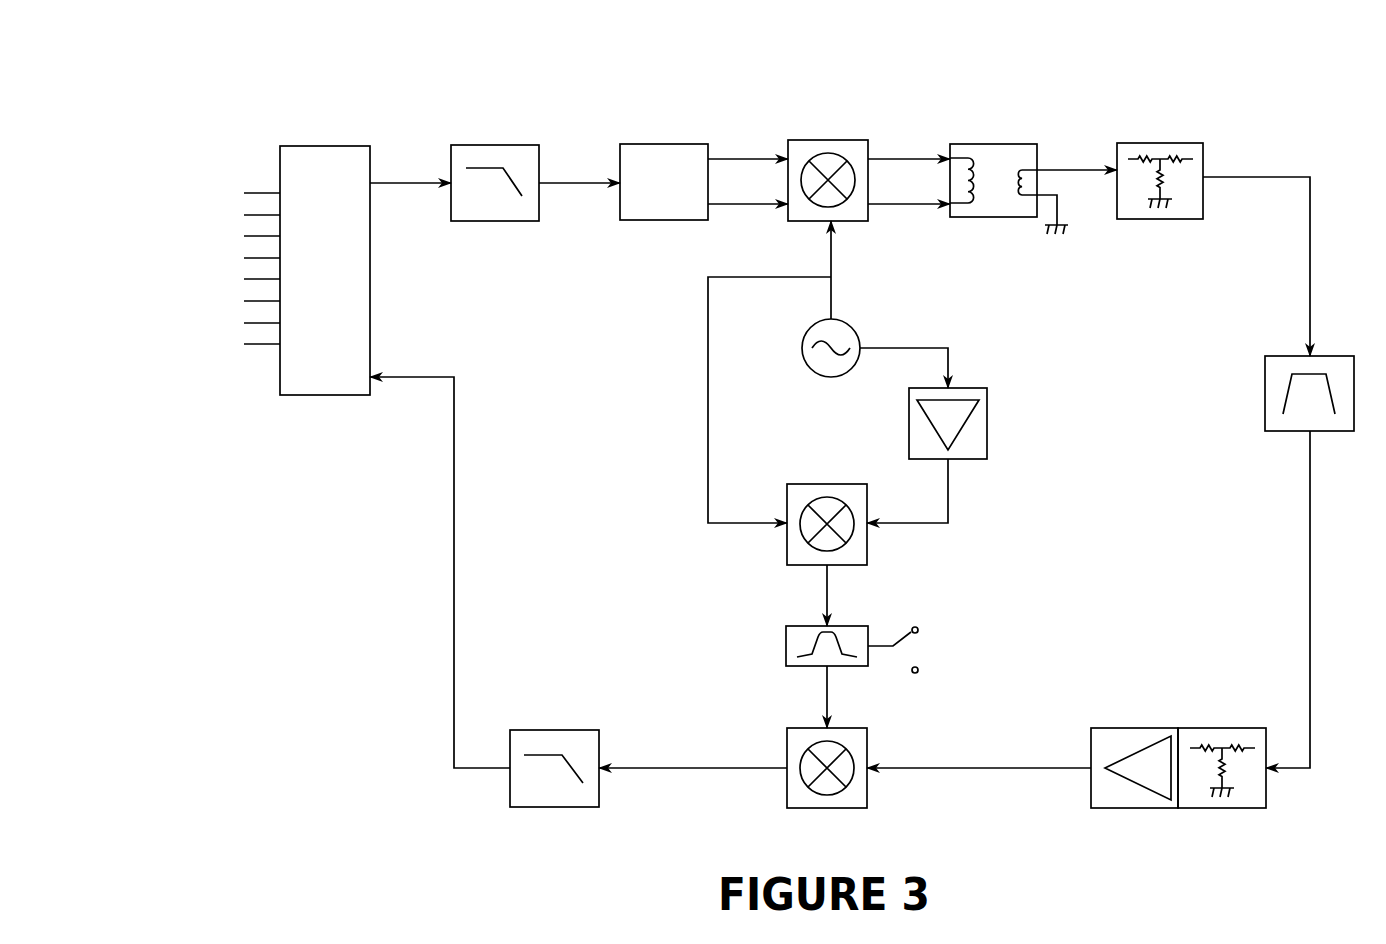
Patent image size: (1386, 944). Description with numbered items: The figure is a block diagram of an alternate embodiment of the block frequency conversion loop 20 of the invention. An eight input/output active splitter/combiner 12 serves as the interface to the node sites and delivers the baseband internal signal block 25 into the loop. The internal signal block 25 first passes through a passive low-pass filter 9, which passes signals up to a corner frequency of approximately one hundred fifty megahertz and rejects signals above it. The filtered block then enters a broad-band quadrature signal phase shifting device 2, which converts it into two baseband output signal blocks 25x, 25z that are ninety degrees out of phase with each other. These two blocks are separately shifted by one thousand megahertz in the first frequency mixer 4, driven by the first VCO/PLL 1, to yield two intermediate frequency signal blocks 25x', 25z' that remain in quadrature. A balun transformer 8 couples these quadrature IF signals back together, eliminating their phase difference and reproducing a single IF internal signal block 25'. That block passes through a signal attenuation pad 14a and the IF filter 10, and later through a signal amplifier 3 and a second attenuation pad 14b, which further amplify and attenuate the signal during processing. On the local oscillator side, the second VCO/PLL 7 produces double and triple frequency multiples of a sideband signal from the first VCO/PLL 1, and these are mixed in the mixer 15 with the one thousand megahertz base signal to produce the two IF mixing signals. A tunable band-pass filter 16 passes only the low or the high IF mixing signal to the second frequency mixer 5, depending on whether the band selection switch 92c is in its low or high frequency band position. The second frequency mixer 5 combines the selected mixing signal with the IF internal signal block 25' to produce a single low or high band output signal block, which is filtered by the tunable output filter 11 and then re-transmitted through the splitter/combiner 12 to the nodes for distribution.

The first VCO/PLL 1 is at (882, 372).
The broad-band quadrature signal phase shifting device 2 is at (662, 154).
The signal amplifier 3 is at (1022, 756).
The first frequency mixer 4 is at (828, 154).
The second frequency mixer 5 is at (750, 795).
The second VCO/PLL 7 is at (960, 455).
The balun transformer 8 is at (1009, 160).
The first low-pass filter 9 is at (516, 180).
The intermediate frequency (IF) filter 10 is at (1295, 562).
The tunable second low-pass filter 11 is at (557, 742).
The splitter/combiner 12 is at (264, 294).
The signal attenuation pad 14a is at (1205, 211).
The signal attenuation pad 14b is at (1222, 756).
The mixer 15 is at (900, 540).
The tunable band-pass filter 16 is at (773, 665).
The frequency conversion loop 20 is at (445, 776).
The internal signal block 25 is at (410, 182).
The output signal block 25x is at (748, 147).
The output signal block 25z is at (748, 192).
The intermediate frequency signal block 25x' is at (909, 147).
The intermediate frequency signal block 25z' is at (909, 192).
The IF internal signal block 25' is at (1069, 157).
The band selection switch 92c is at (973, 649).